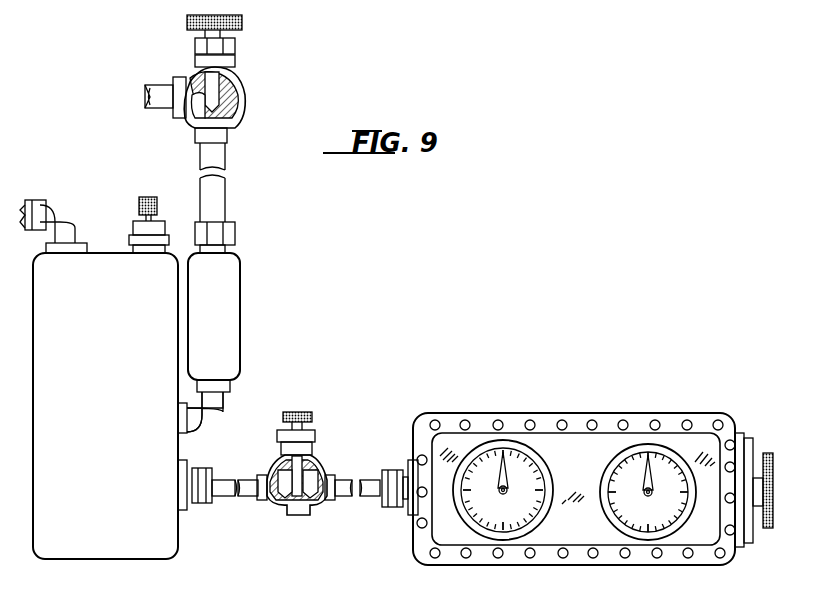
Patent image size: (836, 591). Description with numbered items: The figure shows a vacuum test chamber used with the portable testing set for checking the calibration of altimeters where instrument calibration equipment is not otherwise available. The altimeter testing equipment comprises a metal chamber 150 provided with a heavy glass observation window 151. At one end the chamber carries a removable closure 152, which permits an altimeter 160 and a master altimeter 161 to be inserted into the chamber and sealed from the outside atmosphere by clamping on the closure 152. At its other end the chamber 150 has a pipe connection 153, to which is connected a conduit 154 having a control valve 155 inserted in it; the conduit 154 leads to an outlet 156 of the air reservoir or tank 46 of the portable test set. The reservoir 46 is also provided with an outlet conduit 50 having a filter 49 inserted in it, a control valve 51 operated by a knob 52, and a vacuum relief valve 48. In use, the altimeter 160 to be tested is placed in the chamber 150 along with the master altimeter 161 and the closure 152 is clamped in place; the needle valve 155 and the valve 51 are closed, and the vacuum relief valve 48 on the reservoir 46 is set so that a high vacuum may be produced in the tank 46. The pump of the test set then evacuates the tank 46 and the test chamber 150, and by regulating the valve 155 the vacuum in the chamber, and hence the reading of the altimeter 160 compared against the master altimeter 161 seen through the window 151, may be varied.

The air reservoir 46 is at (76, 452).
The vacuum relief valve 48 is at (133, 224).
The filter 49 is at (236, 308).
The outlet conduit 50 is at (222, 400).
The control valve 51 is at (240, 80).
The knob 52 is at (242, 22).
The metal chamber 150 is at (545, 562).
The glass observation window 151 is at (470, 442).
The removable closure 152 is at (742, 548).
The pipe connection 153 is at (403, 462).
The conduit 154 is at (248, 500).
The control valve 155 is at (308, 516).
The outlet 156 is at (197, 506).
The altimeter 160 is at (645, 540).
The master altimeter 161 is at (503, 540).